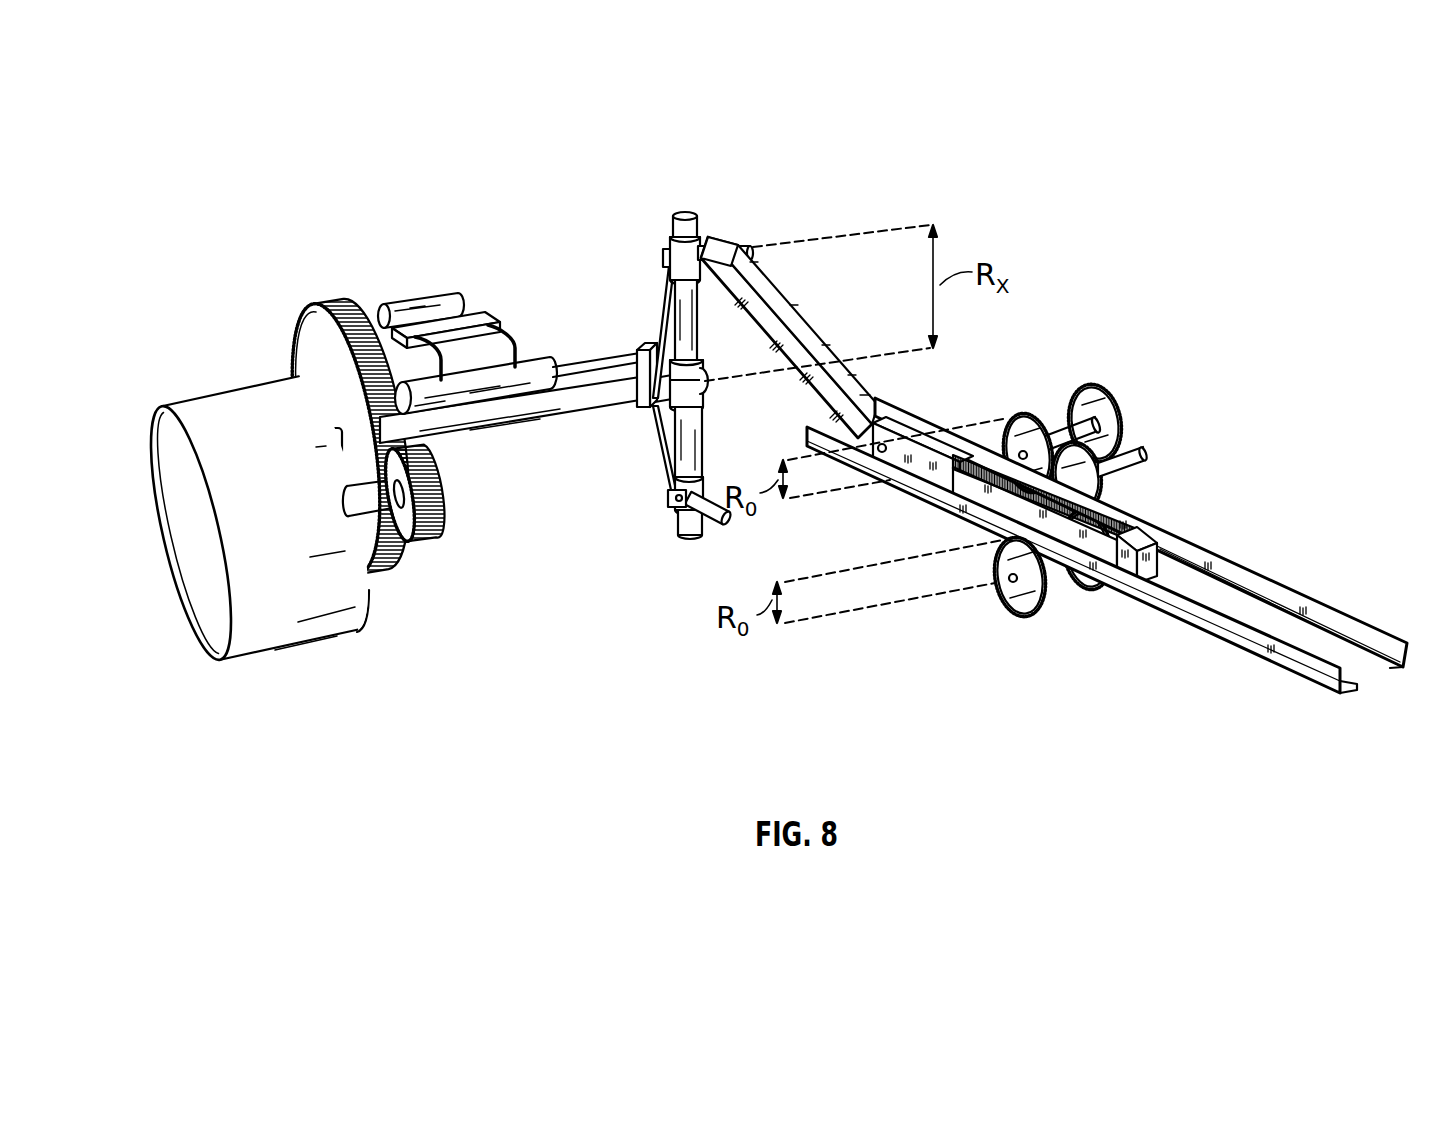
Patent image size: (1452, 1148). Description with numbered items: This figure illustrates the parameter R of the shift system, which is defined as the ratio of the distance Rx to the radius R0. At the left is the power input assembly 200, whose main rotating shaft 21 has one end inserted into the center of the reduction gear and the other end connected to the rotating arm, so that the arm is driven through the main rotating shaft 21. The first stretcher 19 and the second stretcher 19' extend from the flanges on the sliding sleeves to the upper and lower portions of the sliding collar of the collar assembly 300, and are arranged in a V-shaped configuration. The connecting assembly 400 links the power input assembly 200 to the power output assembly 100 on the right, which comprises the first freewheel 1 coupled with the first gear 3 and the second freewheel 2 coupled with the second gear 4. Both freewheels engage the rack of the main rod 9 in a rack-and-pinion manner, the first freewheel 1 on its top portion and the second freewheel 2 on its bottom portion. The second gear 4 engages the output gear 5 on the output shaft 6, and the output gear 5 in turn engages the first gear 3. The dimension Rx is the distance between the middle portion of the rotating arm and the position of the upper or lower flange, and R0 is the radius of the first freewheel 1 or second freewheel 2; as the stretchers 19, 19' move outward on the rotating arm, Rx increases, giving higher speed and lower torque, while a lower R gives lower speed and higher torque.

The power input assembly 200 is at (218, 308).
The main rotating shaft 21 is at (462, 426).
The collar assembly 300 is at (639, 338).
The first stretcher 19 is at (637, 317).
The second stretcher 19' is at (632, 448).
The connecting assembly 400 is at (707, 197).
The power output assembly 100 is at (1107, 545).
The first freewheel 1 is at (1035, 420).
The second freewheel 2 is at (1022, 615).
The first gear 3 is at (1100, 390).
The second gear 4 is at (1083, 590).
The output gear 5 is at (1002, 510).
The output shaft 6 is at (1133, 455).
The main rod 9 is at (1152, 566).